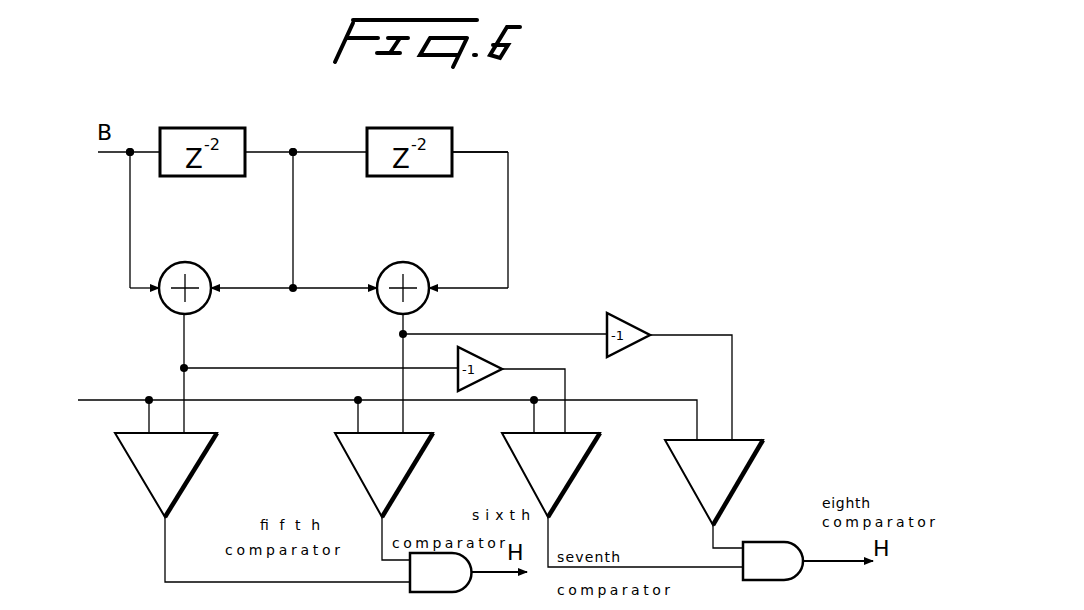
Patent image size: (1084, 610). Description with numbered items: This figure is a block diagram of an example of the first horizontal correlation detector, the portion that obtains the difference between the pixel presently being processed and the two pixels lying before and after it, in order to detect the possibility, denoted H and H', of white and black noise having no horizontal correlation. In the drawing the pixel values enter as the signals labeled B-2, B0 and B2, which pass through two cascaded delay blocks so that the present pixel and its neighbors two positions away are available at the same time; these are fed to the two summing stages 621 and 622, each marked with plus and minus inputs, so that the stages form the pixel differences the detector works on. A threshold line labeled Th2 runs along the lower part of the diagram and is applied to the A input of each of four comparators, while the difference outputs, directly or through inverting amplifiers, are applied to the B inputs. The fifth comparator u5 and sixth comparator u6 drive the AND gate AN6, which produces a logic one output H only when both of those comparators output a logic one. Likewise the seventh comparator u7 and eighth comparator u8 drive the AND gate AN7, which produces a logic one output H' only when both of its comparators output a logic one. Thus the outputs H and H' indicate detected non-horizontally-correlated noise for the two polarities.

The first adder (subtractor) 621 is at (199, 263).
The second adder (subtractor) 622 is at (412, 264).
The fifth comparator u5 is at (193, 474).
The sixth comparator u6 is at (411, 476).
The seventh comparator u7 is at (578, 478).
The eighth comparator u8 is at (747, 479).
The AND gate AN6 is at (468, 572).
The AND gate AN7 is at (808, 561).
The input signal B-2 is at (128, 156).
The delayed signal B0 is at (296, 156).
The delayed signal B2 is at (491, 155).
The threshold signal Th2 is at (387, 405).